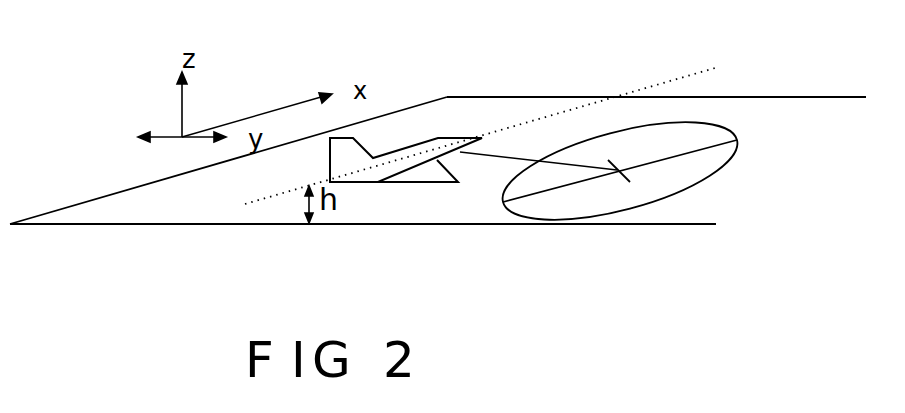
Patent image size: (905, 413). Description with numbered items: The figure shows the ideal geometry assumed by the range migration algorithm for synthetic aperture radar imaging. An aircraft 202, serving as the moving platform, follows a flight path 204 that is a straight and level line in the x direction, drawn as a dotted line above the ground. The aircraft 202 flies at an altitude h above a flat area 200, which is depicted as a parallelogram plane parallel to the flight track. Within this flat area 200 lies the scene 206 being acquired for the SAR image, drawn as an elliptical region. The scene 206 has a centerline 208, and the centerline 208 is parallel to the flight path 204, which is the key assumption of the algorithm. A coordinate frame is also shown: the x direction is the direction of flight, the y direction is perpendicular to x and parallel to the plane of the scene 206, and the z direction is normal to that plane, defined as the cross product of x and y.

The flat area 200 is at (808, 108).
The aircraft 202 is at (420, 137).
The flight path 204 is at (680, 80).
The scene 206 is at (667, 192).
The centerline 208 is at (730, 155).